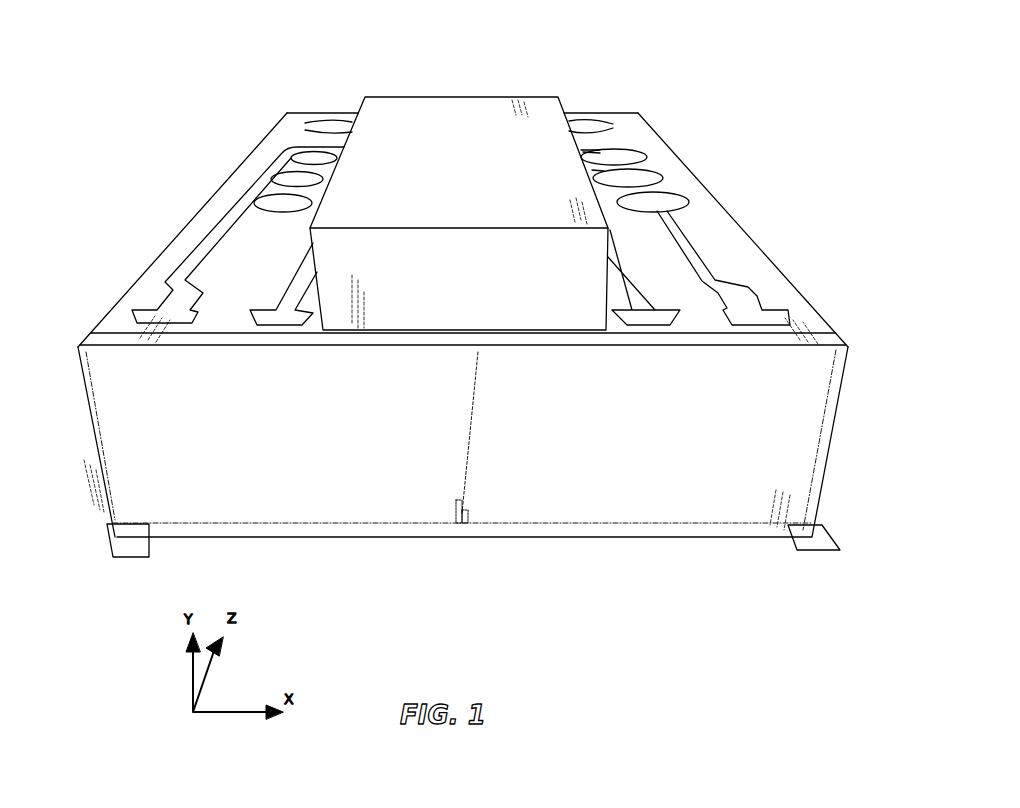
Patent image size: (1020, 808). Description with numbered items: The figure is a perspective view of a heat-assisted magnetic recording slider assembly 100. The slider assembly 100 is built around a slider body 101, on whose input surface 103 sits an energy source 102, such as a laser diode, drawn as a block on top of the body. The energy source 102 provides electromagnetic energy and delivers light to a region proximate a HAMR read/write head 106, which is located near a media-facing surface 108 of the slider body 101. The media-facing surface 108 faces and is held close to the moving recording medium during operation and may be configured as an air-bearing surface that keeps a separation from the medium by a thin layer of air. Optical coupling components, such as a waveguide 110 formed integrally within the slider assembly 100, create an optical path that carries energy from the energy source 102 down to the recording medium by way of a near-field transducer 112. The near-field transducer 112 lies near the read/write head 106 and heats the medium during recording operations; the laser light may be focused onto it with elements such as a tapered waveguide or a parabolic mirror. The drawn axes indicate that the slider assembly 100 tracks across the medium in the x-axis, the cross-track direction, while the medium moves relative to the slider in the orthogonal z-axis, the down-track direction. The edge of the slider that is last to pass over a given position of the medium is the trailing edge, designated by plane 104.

The HAMR slider assembly 100 is at (648, 62).
The slider body 101 is at (733, 213).
The energy source 102 is at (382, 97).
The input surface 103 is at (197, 228).
The plane 104 is at (137, 558).
The HAMR read/write head 106 is at (470, 522).
The media-facing surface 108 is at (830, 553).
The waveguide 110 is at (472, 425).
The near-field transducer 112 is at (462, 525).